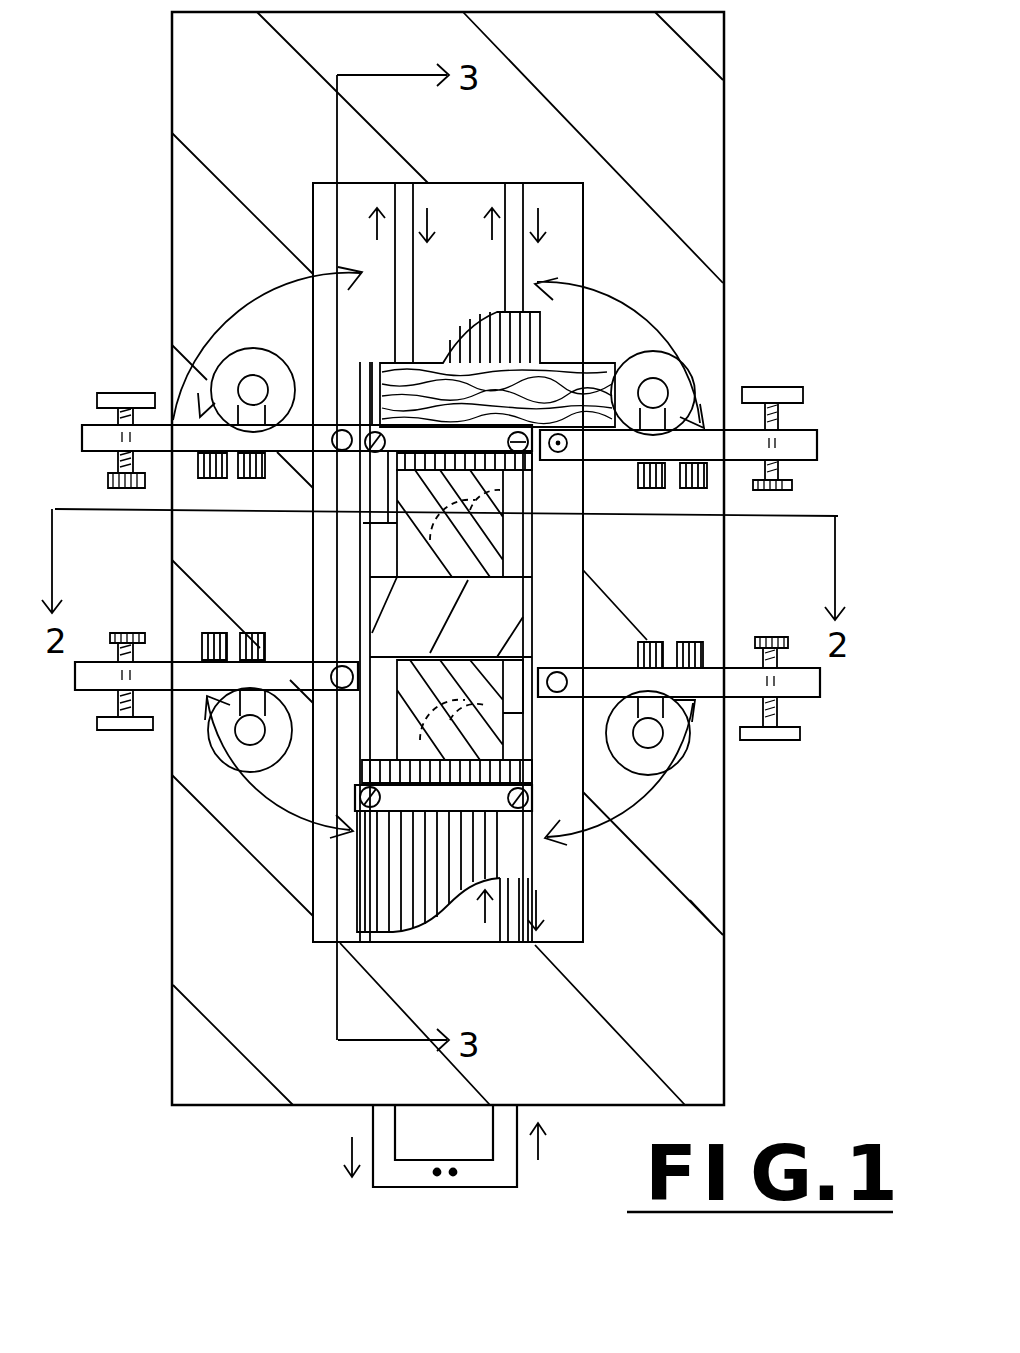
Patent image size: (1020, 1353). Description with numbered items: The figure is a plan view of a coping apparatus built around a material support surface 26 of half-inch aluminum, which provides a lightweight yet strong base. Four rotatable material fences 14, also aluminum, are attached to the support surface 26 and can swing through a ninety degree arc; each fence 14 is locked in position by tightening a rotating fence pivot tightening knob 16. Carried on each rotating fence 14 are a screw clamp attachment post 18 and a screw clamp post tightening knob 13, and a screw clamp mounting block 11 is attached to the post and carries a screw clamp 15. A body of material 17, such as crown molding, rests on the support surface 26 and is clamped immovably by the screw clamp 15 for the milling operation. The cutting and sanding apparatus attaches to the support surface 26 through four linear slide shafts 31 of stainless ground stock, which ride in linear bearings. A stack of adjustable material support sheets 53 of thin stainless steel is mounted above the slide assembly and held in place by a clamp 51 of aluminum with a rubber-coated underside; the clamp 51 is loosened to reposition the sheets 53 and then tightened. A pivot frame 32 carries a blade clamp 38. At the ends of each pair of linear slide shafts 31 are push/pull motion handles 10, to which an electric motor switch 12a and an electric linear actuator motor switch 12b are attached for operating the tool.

The push/pull motion handle 10 is at (504, 1173).
The screw clamp mounting block 11 is at (760, 440).
The electric motor switch 12a is at (437, 1170).
The electric linear actuator motor switch 12b is at (453, 1172).
The screw clamp post tightening knob 13 is at (695, 483).
The rotatable material fence 14 is at (92, 673).
The screw clamp 15 is at (230, 395).
The rotating fence pivot tightening knob 16 is at (338, 452).
The body of material 17 is at (535, 392).
The screw clamp attachment post 18 is at (685, 682).
The material support surface 26 is at (646, 950).
The linear slide shaft 31 is at (402, 332).
The pivot frame 32 is at (460, 632).
The blade clamp 38 is at (482, 750).
The clamp 51 is at (452, 798).
The adjustable material support sheet 53 is at (378, 895).